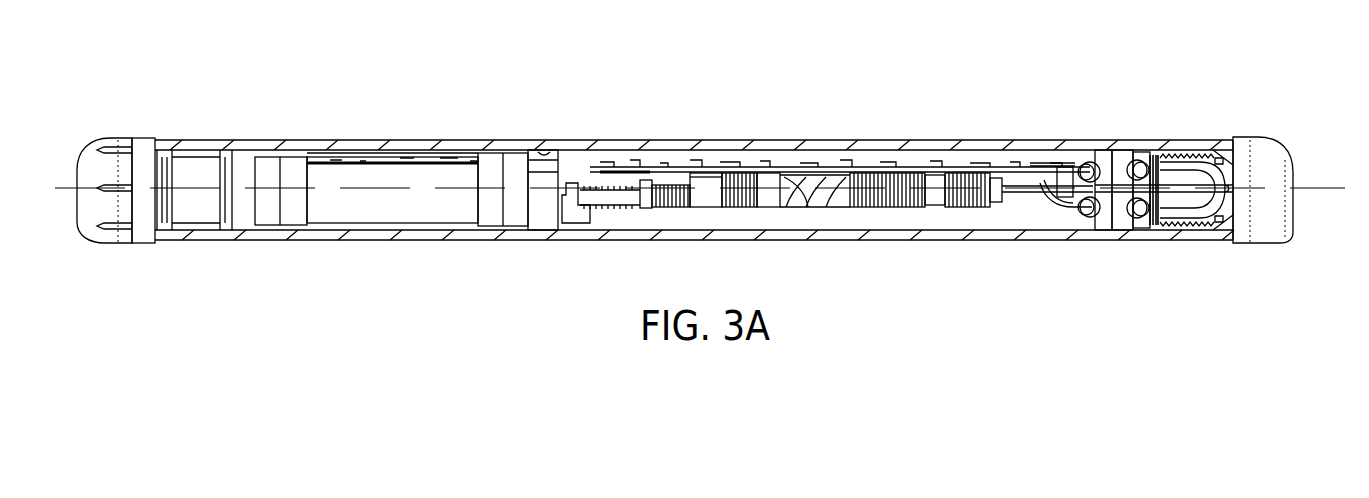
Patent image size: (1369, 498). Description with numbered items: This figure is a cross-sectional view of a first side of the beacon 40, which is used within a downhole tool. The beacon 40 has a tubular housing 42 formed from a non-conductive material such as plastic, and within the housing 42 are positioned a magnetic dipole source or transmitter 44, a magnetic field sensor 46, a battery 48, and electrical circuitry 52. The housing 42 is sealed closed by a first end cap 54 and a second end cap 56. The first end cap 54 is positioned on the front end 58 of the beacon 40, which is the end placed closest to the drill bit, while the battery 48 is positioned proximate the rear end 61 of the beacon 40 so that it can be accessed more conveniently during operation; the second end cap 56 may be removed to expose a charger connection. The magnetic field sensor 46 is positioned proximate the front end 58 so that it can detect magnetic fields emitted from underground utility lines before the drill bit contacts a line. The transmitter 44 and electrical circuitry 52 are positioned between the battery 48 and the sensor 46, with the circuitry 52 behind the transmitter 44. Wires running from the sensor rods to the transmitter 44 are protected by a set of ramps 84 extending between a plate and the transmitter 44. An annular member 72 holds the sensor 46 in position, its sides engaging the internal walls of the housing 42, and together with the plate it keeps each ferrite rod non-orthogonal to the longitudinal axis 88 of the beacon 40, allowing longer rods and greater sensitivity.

The beacon 40 is at (660, 72).
The tubular housing 42 is at (748, 140).
The magnetic dipole source or transmitter 44 is at (897, 203).
The magnetic field sensor 46 is at (1099, 155).
The battery 48 is at (343, 178).
The electrical circuitry 52 is at (873, 152).
The first end cap 54 is at (1260, 163).
The second end cap 56 is at (92, 160).
The front end 58 is at (1235, 137).
The rear end 61 is at (135, 140).
The annular member 72 is at (1122, 210).
The ramps 84 is at (1045, 195).
The longitudinal axis 88 is at (1302, 189).